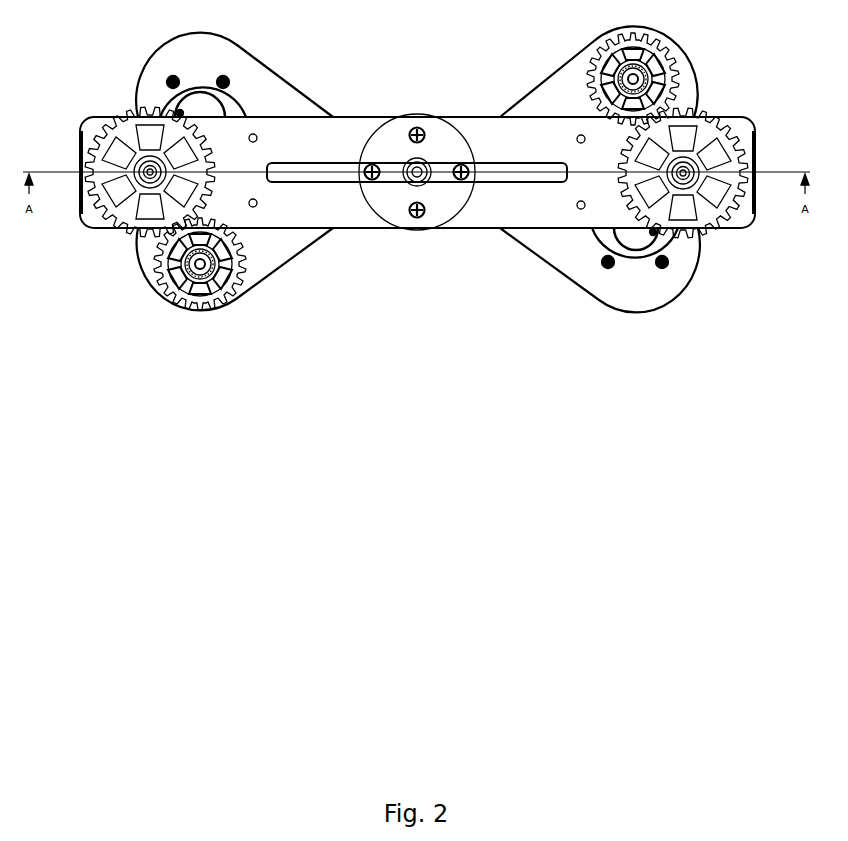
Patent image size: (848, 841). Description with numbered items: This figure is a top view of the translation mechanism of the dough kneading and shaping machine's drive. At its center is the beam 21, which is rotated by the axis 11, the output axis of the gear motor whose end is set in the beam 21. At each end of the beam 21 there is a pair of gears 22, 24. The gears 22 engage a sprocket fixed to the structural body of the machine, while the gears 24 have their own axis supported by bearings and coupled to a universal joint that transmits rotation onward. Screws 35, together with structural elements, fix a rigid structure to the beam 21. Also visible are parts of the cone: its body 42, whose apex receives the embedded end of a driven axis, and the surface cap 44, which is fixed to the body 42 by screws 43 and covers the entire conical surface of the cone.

The axis 11 is at (425, 183).
The beam 21 is at (330, 212).
The gears 22 is at (183, 300).
The gears 24 is at (125, 212).
The screws 35 is at (637, 235).
The body 42 is at (638, 267).
The screws 43 is at (608, 270).
The surface cap 44 is at (558, 250).